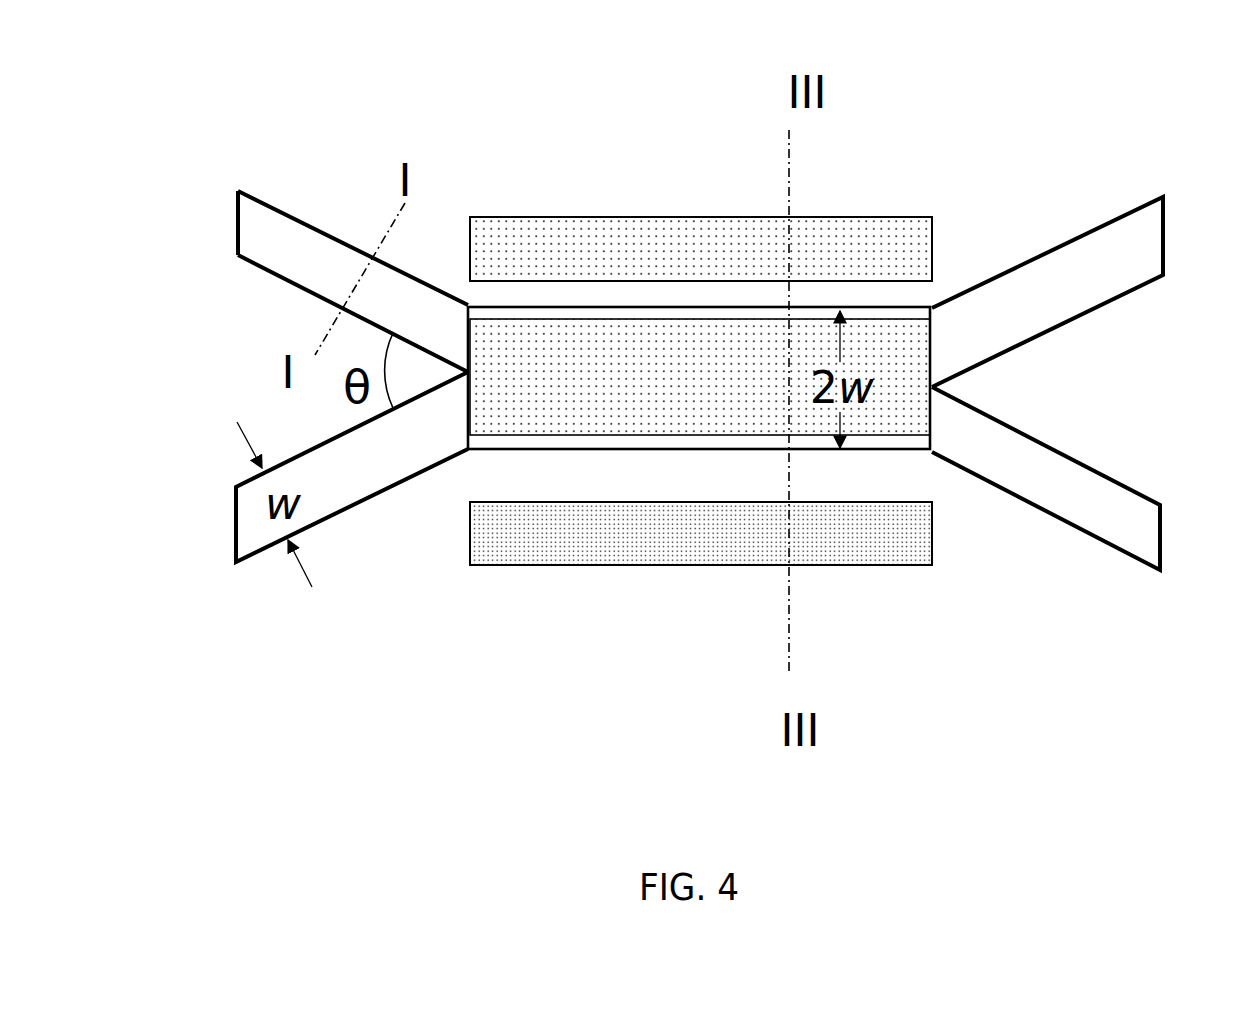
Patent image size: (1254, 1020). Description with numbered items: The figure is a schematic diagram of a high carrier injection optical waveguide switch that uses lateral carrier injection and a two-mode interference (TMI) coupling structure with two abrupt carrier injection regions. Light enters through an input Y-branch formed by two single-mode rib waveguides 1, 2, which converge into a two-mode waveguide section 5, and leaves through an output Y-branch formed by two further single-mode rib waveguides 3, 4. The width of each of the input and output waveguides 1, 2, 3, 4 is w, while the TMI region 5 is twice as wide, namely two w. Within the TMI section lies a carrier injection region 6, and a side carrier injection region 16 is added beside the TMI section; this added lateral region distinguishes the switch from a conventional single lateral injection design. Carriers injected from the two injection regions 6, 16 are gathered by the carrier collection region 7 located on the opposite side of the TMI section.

The single-mode rib waveguide 1 is at (303, 254).
The single-mode rib waveguide 2 is at (378, 462).
The single-mode rib waveguide 3 is at (1033, 297).
The single-mode rib waveguide 4 is at (1032, 470).
The two-mode waveguide section 5 is at (534, 307).
The carrier injection region 6 is at (597, 357).
The carrier collection region 7 is at (657, 527).
The side carrier injection region 16 is at (688, 242).